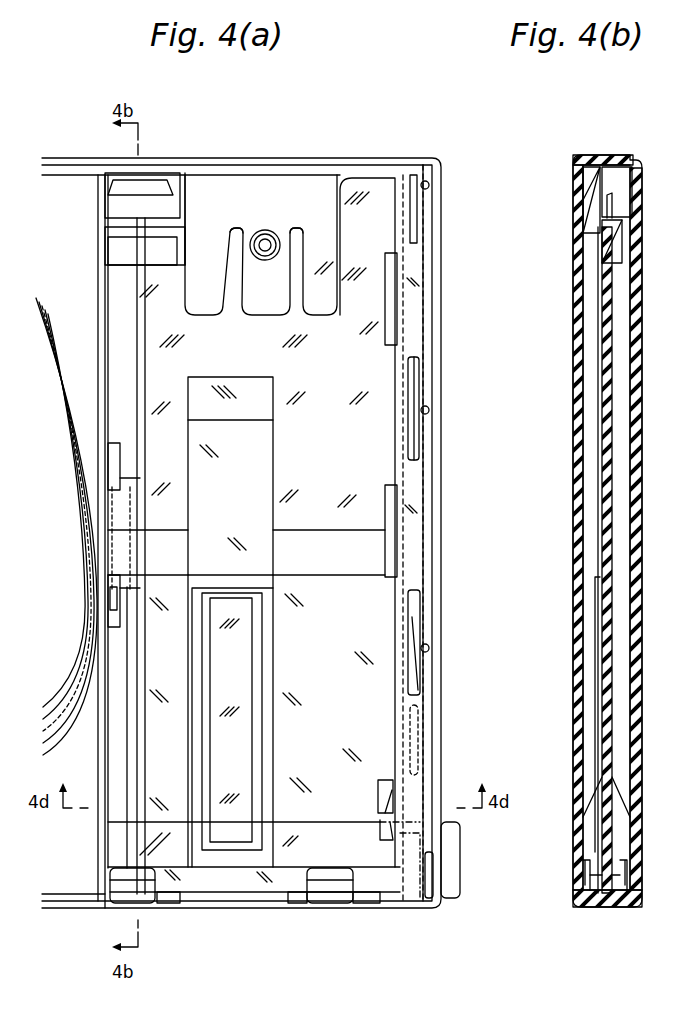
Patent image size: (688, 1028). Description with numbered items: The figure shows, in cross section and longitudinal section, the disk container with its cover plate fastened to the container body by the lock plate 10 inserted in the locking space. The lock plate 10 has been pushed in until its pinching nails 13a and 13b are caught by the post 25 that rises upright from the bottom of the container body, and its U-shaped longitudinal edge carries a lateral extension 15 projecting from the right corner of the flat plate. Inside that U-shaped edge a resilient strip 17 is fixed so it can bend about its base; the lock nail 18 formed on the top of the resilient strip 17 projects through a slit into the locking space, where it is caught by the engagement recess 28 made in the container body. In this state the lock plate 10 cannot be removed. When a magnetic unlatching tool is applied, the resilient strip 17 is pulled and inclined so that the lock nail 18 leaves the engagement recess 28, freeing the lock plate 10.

In FIG. 4A, the lock plate 10 is at (385, 382).
In FIG. 4B, the lock plate 10 is at (607, 566).
In FIG. 4A, the pinching nail 13a is at (233, 228).
In FIG. 4A, the pinching nail 13b is at (297, 228).
In FIG. 4A, the lateral extension 15 is at (460, 905).
In FIG. 4A, the resilient strip 17 is at (425, 728).
In FIG. 4A, the lock nail 18 is at (378, 803).
In FIG. 4A, the post 25 is at (265, 230).
In FIG. 4A, the engagement recess 28 is at (378, 830).